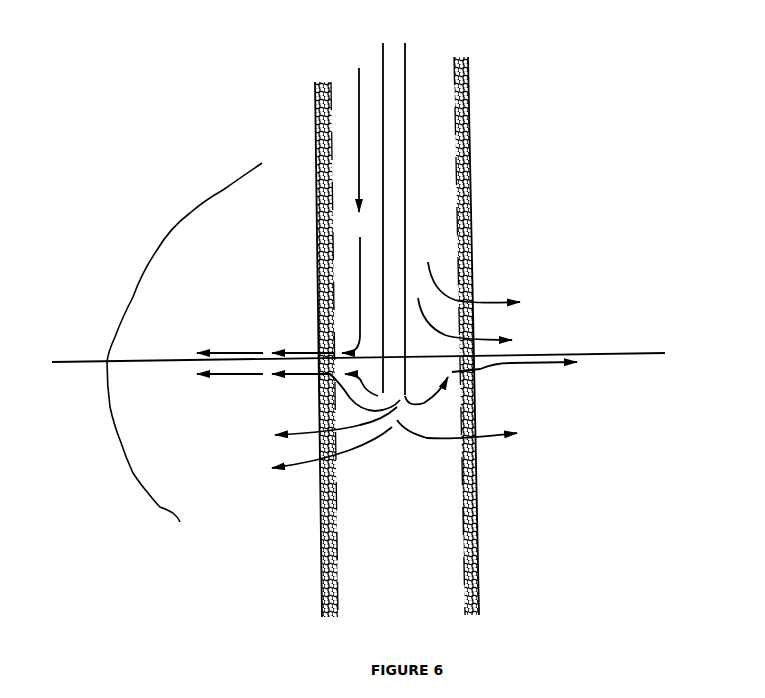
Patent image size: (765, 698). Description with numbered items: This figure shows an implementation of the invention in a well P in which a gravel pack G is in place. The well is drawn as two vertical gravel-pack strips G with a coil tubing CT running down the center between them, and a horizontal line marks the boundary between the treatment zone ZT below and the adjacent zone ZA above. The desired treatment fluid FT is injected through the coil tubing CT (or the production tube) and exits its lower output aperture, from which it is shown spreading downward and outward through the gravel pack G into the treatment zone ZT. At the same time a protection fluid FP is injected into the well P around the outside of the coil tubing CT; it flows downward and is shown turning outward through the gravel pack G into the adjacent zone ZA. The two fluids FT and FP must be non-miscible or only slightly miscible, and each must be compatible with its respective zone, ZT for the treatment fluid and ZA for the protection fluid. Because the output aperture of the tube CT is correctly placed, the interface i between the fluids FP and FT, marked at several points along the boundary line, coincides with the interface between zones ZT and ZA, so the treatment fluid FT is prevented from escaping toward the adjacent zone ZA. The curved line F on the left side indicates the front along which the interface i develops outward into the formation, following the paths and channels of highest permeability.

The coil tubing CT is at (395, 206).
The gravel pack G is at (462, 60).
The well P is at (432, 115).
The protection fluid FP is at (357, 214).
The treatment fluid FT is at (389, 415).
The flame front F is at (184, 342).
The interface i is at (367, 348).
The adjacent zone ZA is at (370, 348).
The treatment zone ZT is at (677, 373).